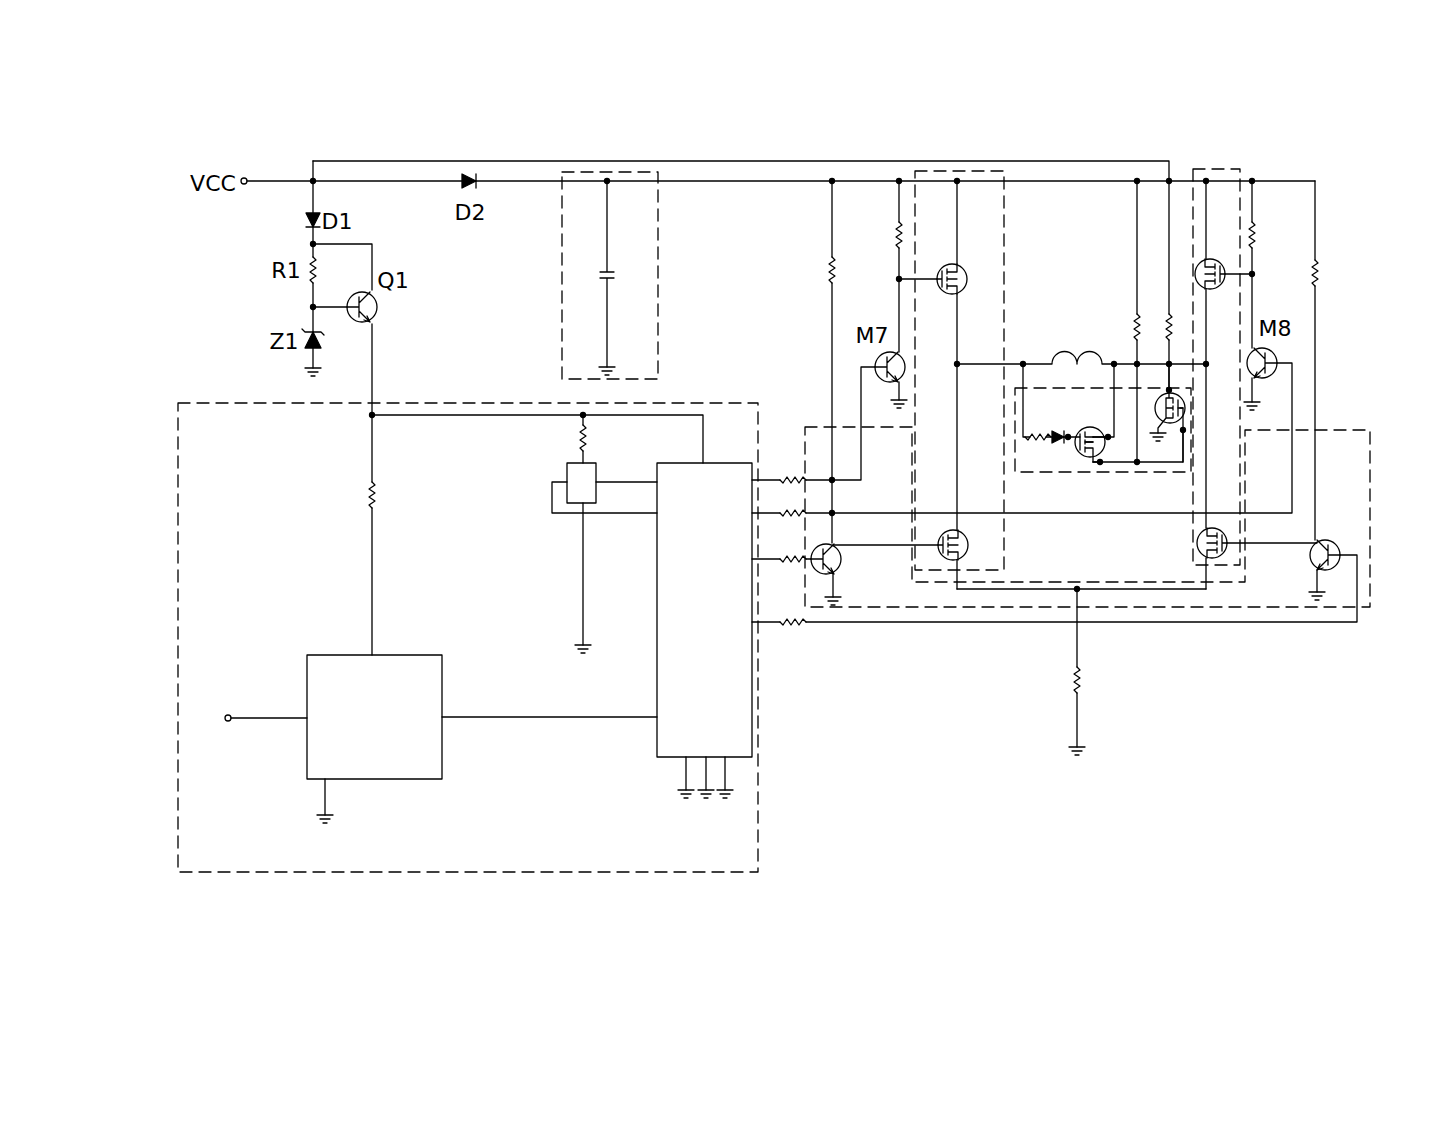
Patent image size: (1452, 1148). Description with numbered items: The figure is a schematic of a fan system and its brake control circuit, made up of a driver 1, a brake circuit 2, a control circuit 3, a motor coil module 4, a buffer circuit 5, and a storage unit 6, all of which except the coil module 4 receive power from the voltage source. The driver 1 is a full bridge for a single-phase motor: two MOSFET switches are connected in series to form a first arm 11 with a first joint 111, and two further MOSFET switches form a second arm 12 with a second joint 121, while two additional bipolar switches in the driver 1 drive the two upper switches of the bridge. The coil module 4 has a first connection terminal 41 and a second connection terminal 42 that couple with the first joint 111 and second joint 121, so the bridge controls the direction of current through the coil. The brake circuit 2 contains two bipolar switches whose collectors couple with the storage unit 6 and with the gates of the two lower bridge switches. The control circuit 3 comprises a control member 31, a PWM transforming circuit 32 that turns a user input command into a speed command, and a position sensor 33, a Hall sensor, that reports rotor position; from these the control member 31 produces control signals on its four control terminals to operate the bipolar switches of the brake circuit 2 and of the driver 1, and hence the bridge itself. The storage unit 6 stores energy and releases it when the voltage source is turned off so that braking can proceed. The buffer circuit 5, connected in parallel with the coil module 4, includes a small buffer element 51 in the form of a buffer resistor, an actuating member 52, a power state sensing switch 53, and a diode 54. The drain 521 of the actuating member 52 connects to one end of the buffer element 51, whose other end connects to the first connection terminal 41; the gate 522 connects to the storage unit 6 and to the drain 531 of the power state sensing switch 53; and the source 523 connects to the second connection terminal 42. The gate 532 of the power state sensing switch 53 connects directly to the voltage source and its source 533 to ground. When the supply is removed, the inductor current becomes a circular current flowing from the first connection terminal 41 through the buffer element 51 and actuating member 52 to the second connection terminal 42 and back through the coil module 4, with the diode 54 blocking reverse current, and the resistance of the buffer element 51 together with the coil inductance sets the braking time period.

The driver 1 is at (1110, 108).
The first arm 11 is at (950, 160).
The second arm 12 is at (1217, 168).
The first joint 111 is at (957, 364).
The second joint 121 is at (1205, 362).
The brake circuit 2 is at (1340, 605).
The control circuit 3 is at (500, 877).
The control member 31 is at (738, 757).
The PWM transforming circuit 32 is at (350, 655).
The position sensor 33 is at (593, 463).
The coil module 4 is at (1072, 360).
The first connection terminal 41 is at (1023, 364).
The second connection terminal 42 is at (1114, 364).
The buffer circuit 5 is at (1023, 473).
The buffer element 51 is at (1038, 450).
The actuating member 52 is at (1078, 437).
The drain 521 is at (1100, 462).
The gate 522 is at (1093, 455).
The source 523 is at (1108, 440).
The power state sensing switch 53 is at (1170, 388).
The drain 531 is at (1183, 430).
The gate 532 is at (1172, 390).
The source 533 is at (1183, 465).
The diode 54 is at (1058, 445).
The storage unit 6 is at (665, 208).